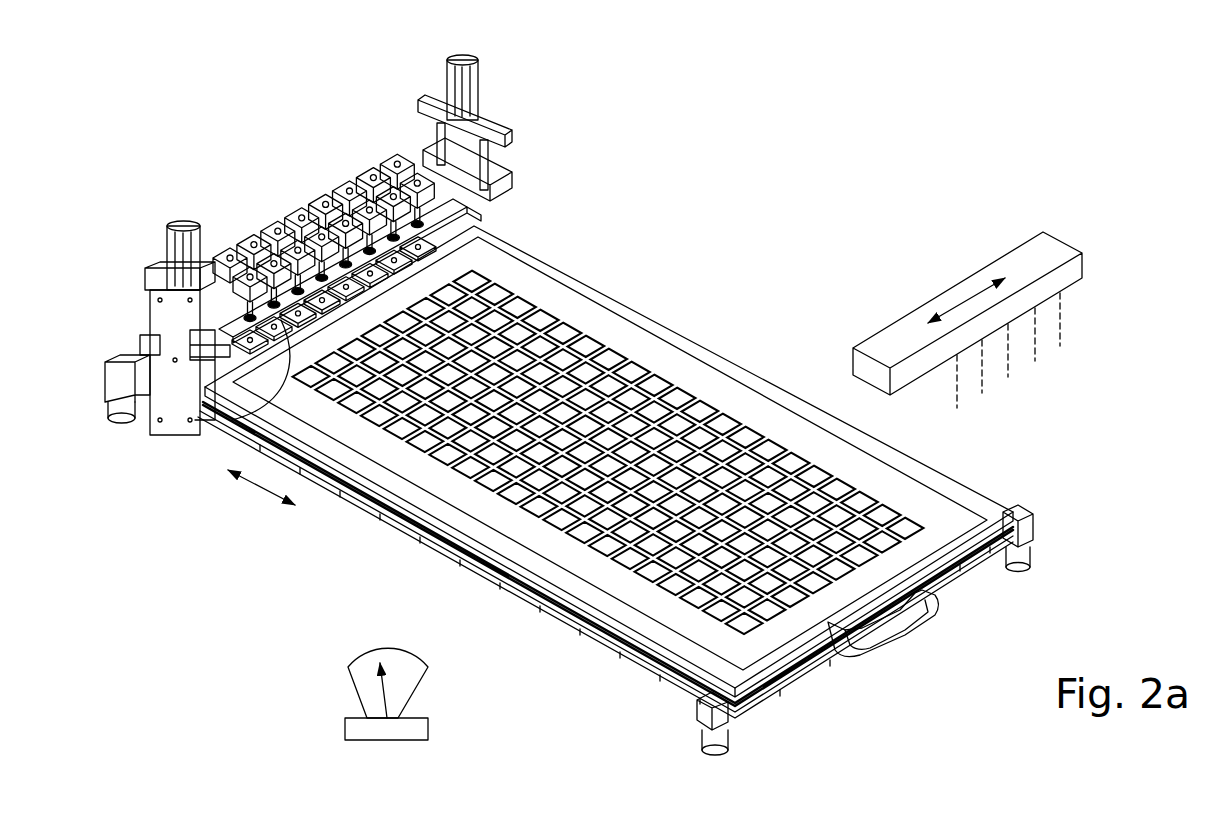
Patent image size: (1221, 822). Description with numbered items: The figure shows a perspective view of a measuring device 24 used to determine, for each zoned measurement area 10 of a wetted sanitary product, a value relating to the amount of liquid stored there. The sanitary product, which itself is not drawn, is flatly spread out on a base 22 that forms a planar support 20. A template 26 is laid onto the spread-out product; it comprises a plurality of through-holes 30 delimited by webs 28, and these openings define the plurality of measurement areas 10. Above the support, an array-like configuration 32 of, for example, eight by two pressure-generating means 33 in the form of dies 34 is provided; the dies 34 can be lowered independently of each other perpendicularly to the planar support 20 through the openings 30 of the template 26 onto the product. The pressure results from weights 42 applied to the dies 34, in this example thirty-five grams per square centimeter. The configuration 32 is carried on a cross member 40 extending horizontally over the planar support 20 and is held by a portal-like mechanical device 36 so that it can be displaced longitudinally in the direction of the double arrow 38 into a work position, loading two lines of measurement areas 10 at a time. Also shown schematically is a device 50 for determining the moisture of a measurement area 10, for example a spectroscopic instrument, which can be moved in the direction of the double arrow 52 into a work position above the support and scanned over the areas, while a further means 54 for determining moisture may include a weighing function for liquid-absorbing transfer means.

The measurement area 10 is at (867, 500).
The planar support 20 is at (629, 490).
The base 22 is at (968, 503).
The measuring device 24 is at (292, 283).
The template 26 is at (745, 407).
The webs 28 is at (616, 452).
The through-holes 30 is at (616, 452).
The array-like configuration 32 is at (308, 211).
The pressure-generating means 33 is at (293, 374).
The dies 34 is at (266, 385).
The mechanical device 36 is at (140, 300).
The double arrow 38 is at (258, 500).
The cross member 40 is at (420, 165).
The weights 42 is at (388, 160).
The device for determining the moisture 50 is at (967, 273).
The double arrow 52 is at (967, 300).
The means for determining the moisture 54 is at (338, 693).